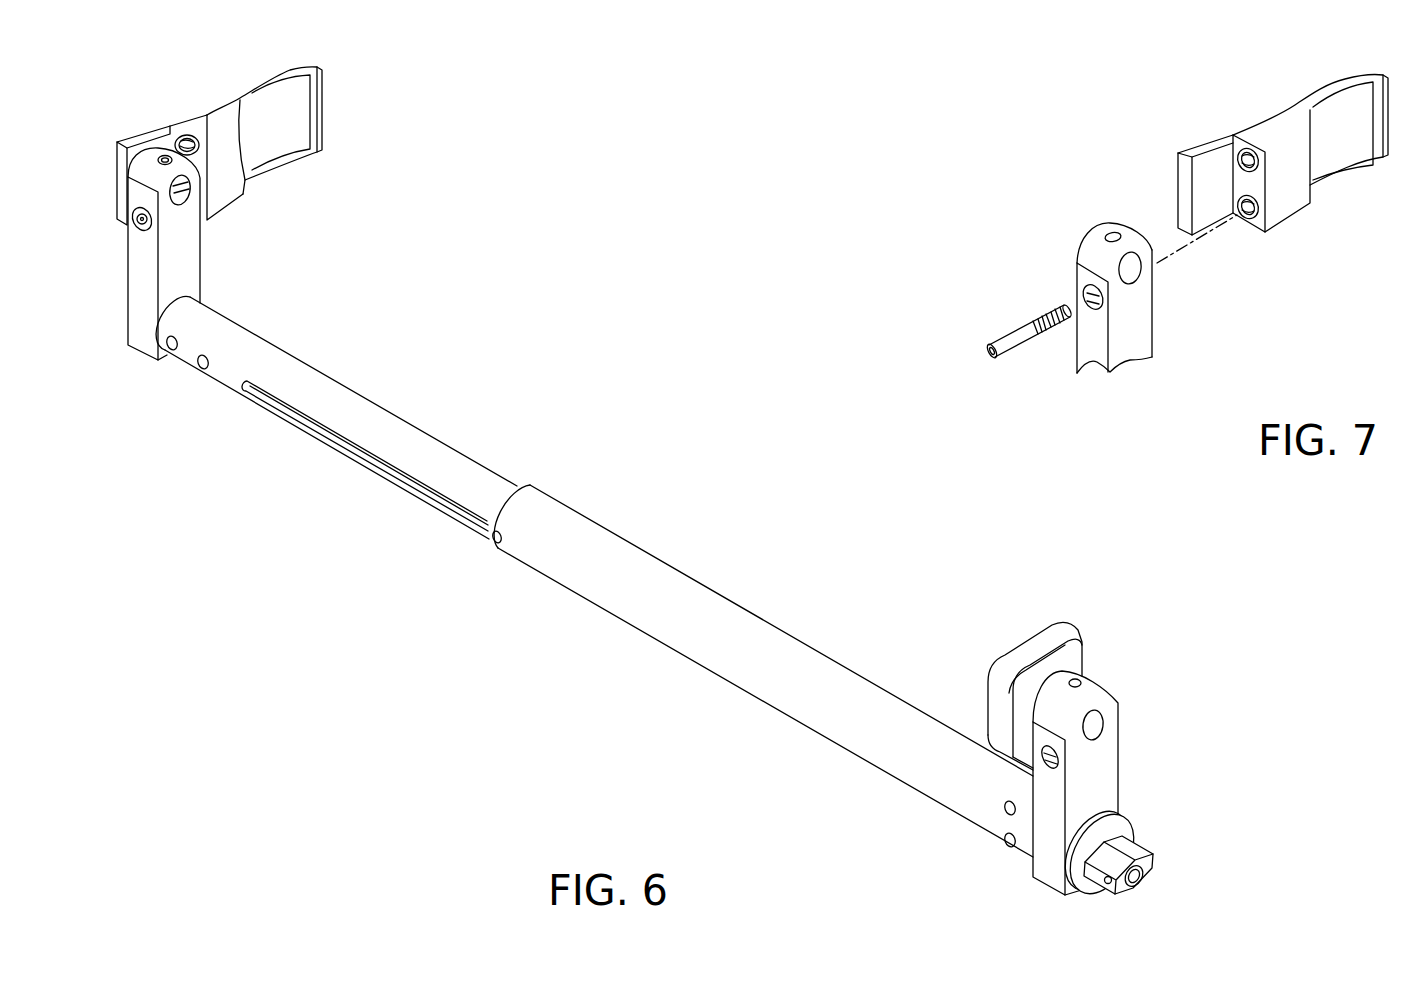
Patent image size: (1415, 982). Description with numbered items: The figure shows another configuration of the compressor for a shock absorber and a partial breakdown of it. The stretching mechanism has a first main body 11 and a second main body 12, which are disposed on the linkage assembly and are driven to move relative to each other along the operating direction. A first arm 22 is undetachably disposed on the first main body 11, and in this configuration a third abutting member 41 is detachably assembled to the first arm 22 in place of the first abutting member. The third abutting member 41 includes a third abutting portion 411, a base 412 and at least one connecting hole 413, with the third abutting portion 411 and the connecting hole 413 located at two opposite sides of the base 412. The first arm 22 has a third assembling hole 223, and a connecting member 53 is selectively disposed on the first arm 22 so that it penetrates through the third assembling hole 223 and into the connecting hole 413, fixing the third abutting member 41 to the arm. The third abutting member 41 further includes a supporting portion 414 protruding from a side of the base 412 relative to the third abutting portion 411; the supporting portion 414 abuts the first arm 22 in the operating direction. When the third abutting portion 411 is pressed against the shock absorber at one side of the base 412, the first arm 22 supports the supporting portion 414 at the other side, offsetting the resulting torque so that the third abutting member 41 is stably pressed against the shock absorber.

In FIG. 6, the first main body 11 is at (386, 417).
In FIG. 6, the second main body 12 is at (563, 577).
In FIG. 6, the first arm 22 is at (143, 286).
In FIG. 6, the third abutting member 41 is at (199, 112).
In FIG. 6, the connecting member 53 is at (136, 228).
In FIG. 7, the connecting member 53 is at (1007, 338).
In FIG. 7, the third assembling hole 223 is at (1086, 293).
In FIG. 7, the third abutting portion 411 is at (1335, 93).
In FIG. 7, the base 412 is at (1275, 132).
In FIG. 7, the connecting hole 413 is at (1251, 227).
In FIG. 7, the supporting portion 414 is at (1178, 155).